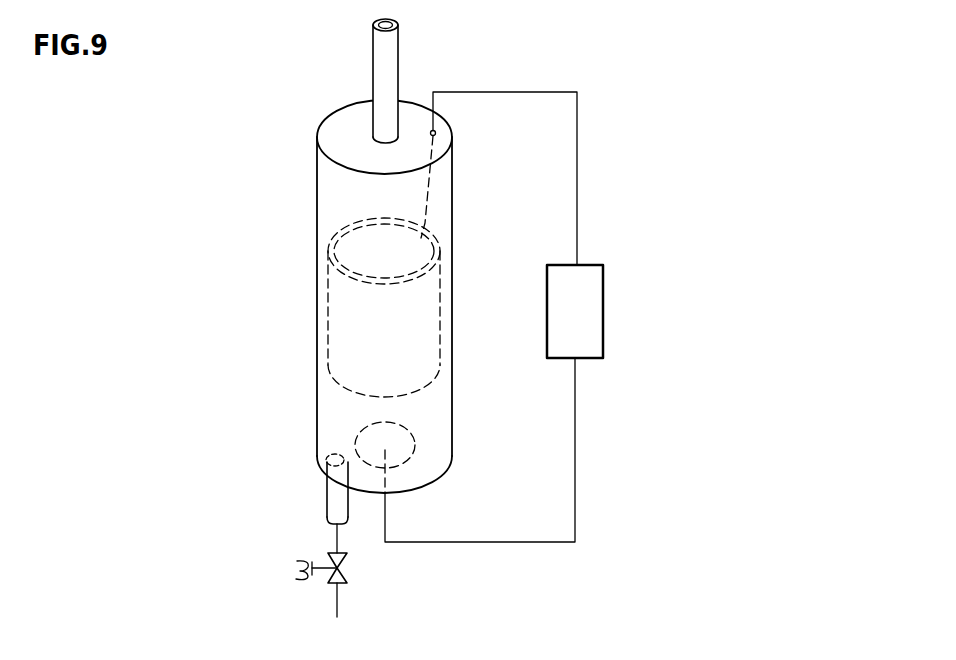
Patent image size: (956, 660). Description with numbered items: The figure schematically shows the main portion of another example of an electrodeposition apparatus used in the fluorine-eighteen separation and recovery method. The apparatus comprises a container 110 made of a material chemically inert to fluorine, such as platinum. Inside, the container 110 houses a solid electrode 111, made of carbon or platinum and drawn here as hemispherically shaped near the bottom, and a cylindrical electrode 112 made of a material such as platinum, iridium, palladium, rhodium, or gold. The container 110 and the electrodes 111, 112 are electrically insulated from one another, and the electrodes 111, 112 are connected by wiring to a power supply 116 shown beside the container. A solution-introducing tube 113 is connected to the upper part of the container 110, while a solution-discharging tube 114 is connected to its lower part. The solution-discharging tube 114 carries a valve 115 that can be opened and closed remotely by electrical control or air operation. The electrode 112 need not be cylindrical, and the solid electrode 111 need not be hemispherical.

The container 110 is at (300, 193).
The solid electrode 111 is at (415, 440).
The cylindrical electrode 112 is at (328, 308).
The solution-introducing tube 113 is at (377, 53).
The solution-discharging tube 114 is at (327, 503).
The valve 115 is at (323, 578).
The power supply 116 is at (597, 338).